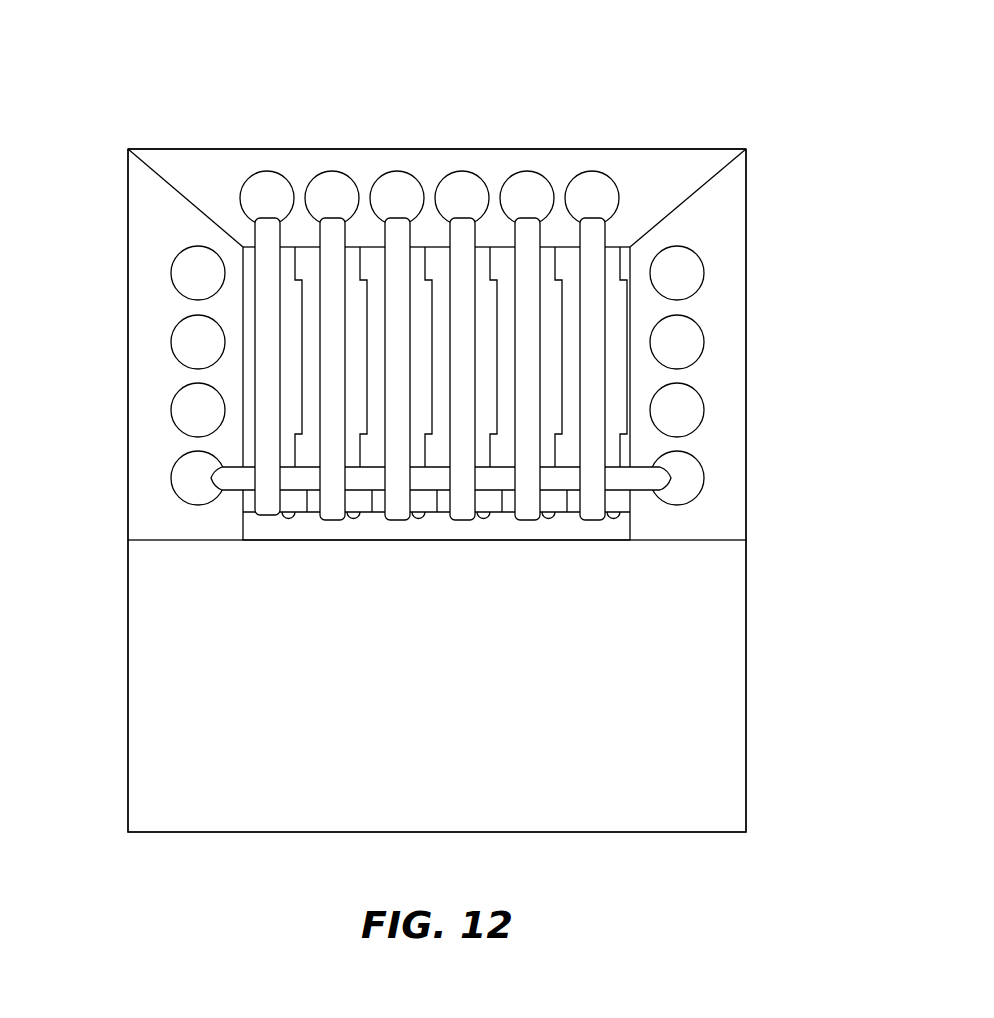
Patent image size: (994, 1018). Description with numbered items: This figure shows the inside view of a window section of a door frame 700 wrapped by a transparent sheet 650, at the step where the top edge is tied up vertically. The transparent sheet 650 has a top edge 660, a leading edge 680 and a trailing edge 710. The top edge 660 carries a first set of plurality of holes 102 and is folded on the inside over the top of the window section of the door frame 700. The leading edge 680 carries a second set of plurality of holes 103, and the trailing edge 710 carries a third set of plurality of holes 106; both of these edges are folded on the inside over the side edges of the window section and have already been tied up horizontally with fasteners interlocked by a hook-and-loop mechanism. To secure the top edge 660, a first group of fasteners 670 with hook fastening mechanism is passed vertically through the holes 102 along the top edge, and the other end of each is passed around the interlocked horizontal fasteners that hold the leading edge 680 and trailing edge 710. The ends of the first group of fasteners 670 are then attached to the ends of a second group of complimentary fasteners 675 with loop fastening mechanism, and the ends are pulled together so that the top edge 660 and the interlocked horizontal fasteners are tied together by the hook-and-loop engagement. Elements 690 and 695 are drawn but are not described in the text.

The transparent sheet 650 is at (131, 120).
The top edge 660 is at (692, 148).
The first group of fasteners 670 is at (607, 233).
The second group of complimentary fasteners 675 is at (618, 305).
The leading edge 680 is at (748, 196).
The ground bus bar 690 is at (641, 494).
The base shelf 695 is at (556, 510).
The door frame 700 is at (128, 683).
The trailing edge 710 is at (128, 197).
The first set of plurality of holes 102 is at (637, 143).
The second set of plurality of holes 103 is at (752, 243).
The third set of plurality of holes 106 is at (122, 243).